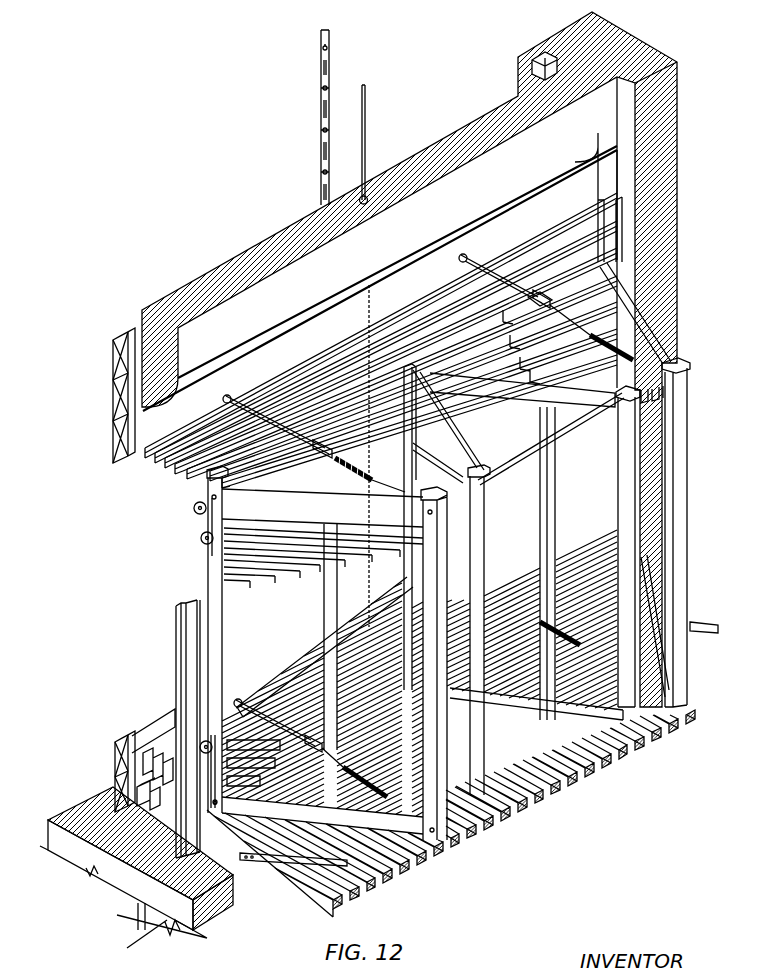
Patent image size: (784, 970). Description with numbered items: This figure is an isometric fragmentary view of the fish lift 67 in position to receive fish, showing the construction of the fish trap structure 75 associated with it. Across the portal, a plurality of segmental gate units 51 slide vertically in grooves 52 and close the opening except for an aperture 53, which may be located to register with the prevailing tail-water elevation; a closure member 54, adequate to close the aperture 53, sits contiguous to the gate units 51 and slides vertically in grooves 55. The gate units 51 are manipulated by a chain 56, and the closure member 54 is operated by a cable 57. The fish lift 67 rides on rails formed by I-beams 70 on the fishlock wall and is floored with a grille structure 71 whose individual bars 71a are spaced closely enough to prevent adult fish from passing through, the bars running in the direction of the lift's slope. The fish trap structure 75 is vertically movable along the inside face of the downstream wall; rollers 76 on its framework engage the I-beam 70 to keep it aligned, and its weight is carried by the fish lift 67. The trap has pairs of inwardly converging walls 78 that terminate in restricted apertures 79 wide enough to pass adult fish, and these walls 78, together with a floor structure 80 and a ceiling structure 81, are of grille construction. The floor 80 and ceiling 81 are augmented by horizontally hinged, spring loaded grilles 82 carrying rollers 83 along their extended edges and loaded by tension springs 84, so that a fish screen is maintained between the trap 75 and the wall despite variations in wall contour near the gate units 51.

The segmental gate units 51 is at (113, 405).
The grooves 52 is at (557, 468).
The aperture 53 is at (149, 586).
The closure member 54 is at (165, 800).
The grooves 55 is at (140, 815).
The chain 56 is at (320, 78).
The cable 57 is at (366, 128).
The fish lift 67 is at (332, 870).
The I-beam 70 is at (177, 672).
The grille structure 71 is at (451, 816).
The bars 71a is at (622, 780).
The fish trap structure 75 is at (433, 590).
The rollers 76 is at (200, 542).
The inwardly converging walls 78 is at (350, 503).
The restricted apertures 79 is at (692, 440).
The floor structure 80 is at (419, 673).
The ceiling structure 81 is at (561, 346).
The hinged grilles 82 is at (381, 489).
The rollers 83 is at (224, 396).
The tension spring 84 is at (375, 486).